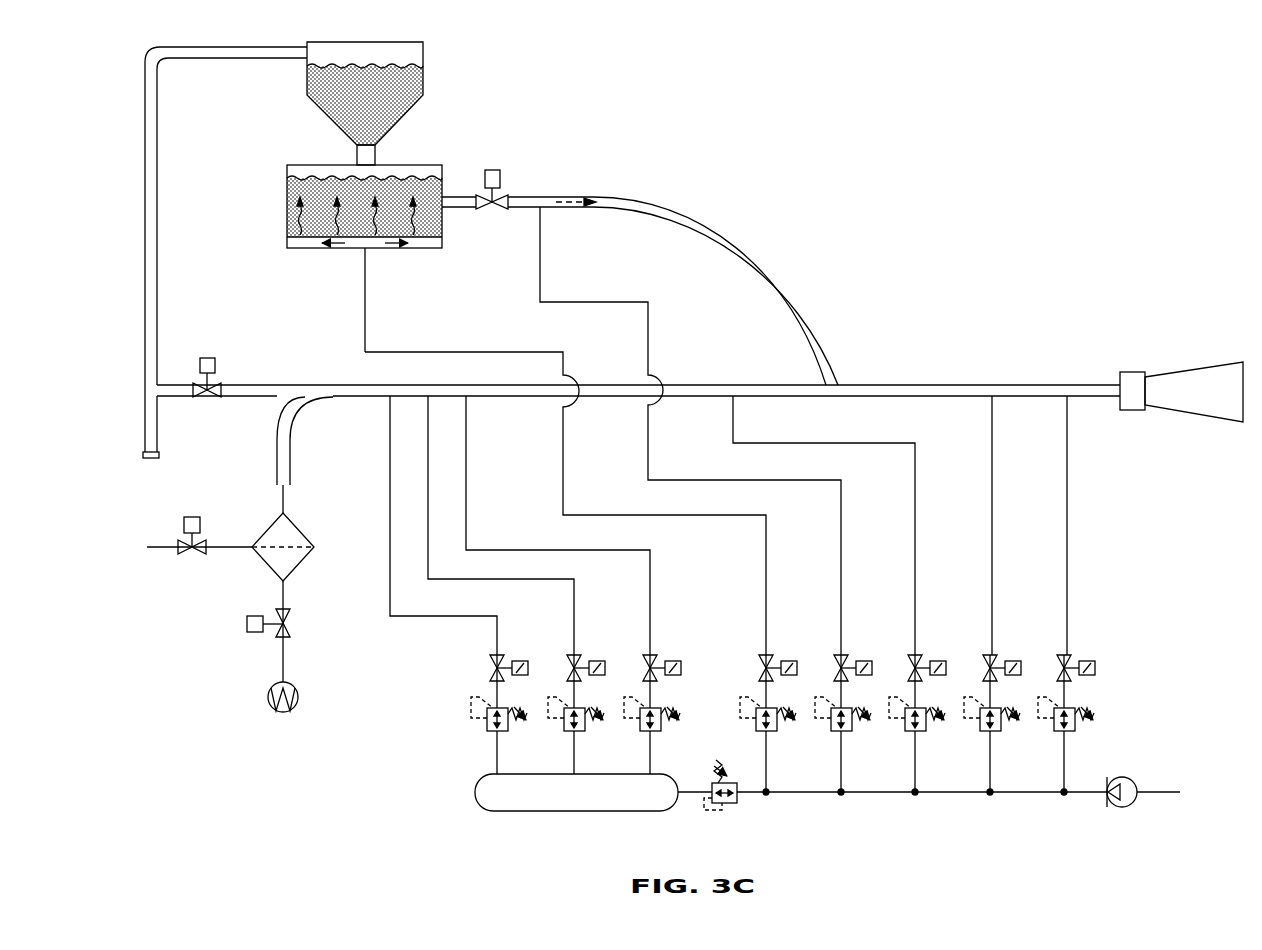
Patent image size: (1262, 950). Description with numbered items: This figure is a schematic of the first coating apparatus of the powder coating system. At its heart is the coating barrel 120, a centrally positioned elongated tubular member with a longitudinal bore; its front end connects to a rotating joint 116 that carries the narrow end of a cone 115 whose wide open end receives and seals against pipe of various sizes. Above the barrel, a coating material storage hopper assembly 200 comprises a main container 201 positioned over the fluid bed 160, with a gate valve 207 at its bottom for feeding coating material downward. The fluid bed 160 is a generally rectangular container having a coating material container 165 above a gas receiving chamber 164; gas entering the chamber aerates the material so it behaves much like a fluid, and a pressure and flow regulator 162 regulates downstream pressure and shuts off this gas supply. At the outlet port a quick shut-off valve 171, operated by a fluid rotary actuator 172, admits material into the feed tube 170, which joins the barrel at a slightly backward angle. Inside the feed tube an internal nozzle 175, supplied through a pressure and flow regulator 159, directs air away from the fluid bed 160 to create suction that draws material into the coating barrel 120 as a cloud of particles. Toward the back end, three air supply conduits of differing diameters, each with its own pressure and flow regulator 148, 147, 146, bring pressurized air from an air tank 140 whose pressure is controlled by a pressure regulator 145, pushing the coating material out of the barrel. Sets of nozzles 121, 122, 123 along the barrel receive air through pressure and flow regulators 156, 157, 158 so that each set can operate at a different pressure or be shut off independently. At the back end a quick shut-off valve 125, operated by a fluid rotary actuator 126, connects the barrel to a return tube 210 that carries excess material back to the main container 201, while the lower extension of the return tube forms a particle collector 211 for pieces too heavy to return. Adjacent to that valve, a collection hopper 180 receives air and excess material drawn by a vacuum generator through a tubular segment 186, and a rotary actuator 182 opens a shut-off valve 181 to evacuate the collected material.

The coating material storage hopper assembly 200 is at (448, 54).
The main container 201 is at (345, 115).
The gate valve 207 is at (372, 152).
The fluid bed 160 is at (276, 166).
The coating material container 165 is at (310, 213).
The gas receiving chamber 164 is at (305, 250).
The return tube 210 is at (145, 143).
The particle collector 211 is at (145, 416).
The coating barrel 120 is at (928, 384).
The quick shut-off valve 125 is at (212, 383).
The fluid rotary actuator 126 is at (207, 357).
The rotating joint 116 is at (1133, 372).
The cone 115 is at (1196, 422).
The quick shut-off valve 171 is at (492, 194).
The fluid rotary actuator 172 is at (490, 168).
The internal nozzle 175 is at (552, 197).
The feed tube 170 is at (714, 226).
The set of nozzles 121 is at (1068, 399).
The set of nozzles 122 is at (993, 399).
The set of nozzles 123 is at (734, 399).
The collection hopper 180 is at (298, 532).
The shut-off valve 181 is at (200, 542).
The rotary actuator 182 is at (192, 516).
The tubular segment 186 is at (265, 697).
The pressure and flow regulator 148 is at (482, 692).
The pressure and flow regulator 147 is at (559, 692).
The pressure and flow regulator 146 is at (635, 692).
The pressure and flow regulator 162 is at (751, 692).
The pressure and flow regulator 159 is at (826, 692).
The pressure and flow regulator 158 is at (900, 692).
The pressure and flow regulator 157 is at (975, 692).
The pressure and flow regulator 156 is at (1049, 692).
The air tank 140 is at (575, 812).
The pressure regulator 145 is at (738, 807).